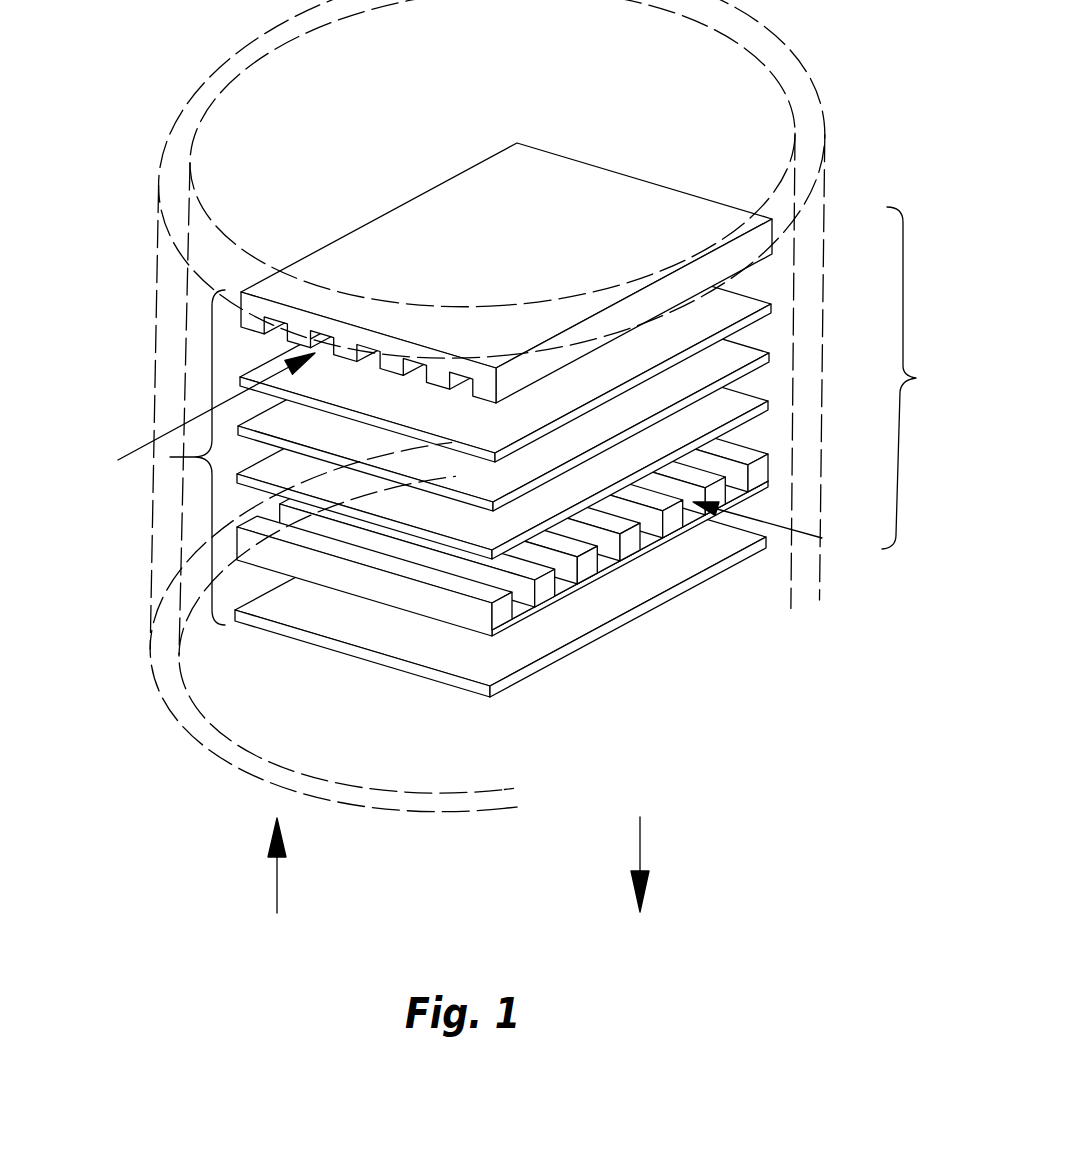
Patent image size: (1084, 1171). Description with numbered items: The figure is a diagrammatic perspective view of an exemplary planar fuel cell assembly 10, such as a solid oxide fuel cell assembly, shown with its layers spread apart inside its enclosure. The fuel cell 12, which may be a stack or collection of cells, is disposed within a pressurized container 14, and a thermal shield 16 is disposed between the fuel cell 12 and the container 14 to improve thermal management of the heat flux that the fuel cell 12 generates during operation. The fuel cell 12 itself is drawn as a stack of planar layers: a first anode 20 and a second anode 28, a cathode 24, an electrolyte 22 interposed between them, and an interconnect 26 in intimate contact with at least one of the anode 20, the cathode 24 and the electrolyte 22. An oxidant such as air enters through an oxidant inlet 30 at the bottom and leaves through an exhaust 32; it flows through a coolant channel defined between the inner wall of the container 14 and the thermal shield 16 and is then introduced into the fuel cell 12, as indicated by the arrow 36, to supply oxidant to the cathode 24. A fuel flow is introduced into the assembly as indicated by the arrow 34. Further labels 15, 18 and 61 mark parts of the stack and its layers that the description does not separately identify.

The fuel cell assembly 10 is at (516, 464).
The fuel cell 12 is at (467, 422).
The pressurized container 14 is at (157, 631).
The fuel cell stack 15 is at (172, 457).
The thermal shield 16 is at (186, 534).
The top end plate with flow channels 18 is at (775, 237).
The anode 20 is at (773, 309).
The electrolyte 22 is at (771, 360).
The cathode 24 is at (770, 406).
The interconnect 26 is at (770, 466).
The anode 28 is at (766, 549).
The oxidant inlet 30 is at (277, 878).
The exhaust 32 is at (643, 848).
The fuel flow 34 is at (143, 445).
The oxidant flow into fuel cell 36 is at (815, 518).
The fuel cell unit 61 is at (917, 378).